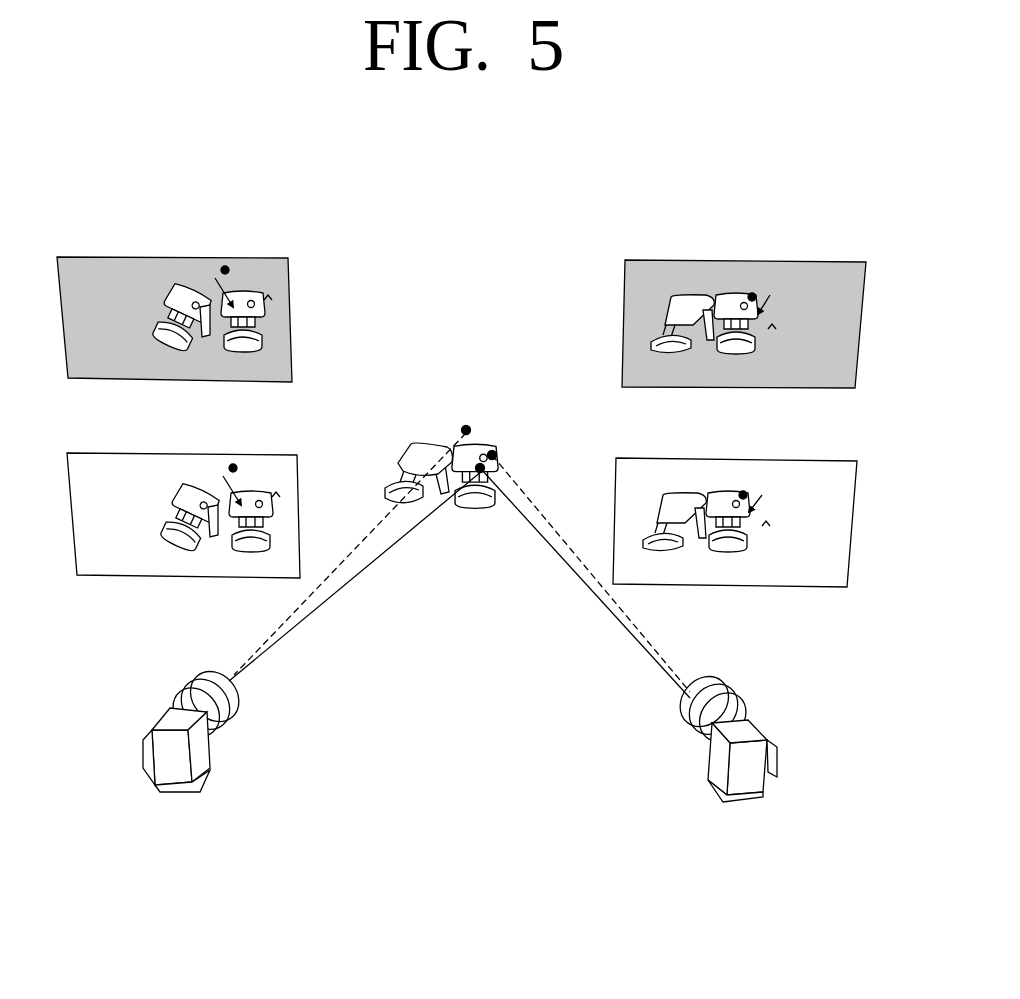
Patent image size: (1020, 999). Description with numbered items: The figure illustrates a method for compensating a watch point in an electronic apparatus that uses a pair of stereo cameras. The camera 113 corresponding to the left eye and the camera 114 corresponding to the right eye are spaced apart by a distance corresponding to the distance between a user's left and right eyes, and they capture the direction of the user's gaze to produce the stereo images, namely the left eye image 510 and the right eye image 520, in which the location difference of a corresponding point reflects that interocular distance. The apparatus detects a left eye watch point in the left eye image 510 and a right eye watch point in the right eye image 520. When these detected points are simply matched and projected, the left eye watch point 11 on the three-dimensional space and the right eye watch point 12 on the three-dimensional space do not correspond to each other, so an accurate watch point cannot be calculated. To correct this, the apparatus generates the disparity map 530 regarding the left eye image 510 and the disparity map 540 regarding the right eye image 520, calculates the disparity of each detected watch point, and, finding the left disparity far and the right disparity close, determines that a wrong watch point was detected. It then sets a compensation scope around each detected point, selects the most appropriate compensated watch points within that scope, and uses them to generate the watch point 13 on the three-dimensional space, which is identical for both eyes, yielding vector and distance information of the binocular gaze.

The left eye watch point on the three-dimensional space 11 is at (467, 424).
The right eye watch point on the three-dimensional space 12 is at (494, 450).
The watch point on a three-dimensional space 13 is at (480, 474).
The camera corresponding to the left eye 113 is at (215, 750).
The camera corresponding to the right eye 114 is at (710, 765).
The left eye image 510 is at (120, 453).
The right eye image 520 is at (812, 458).
The disparity map regarding the left eye image 530 is at (112, 257).
The disparity map regarding the right eye image 540 is at (820, 259).